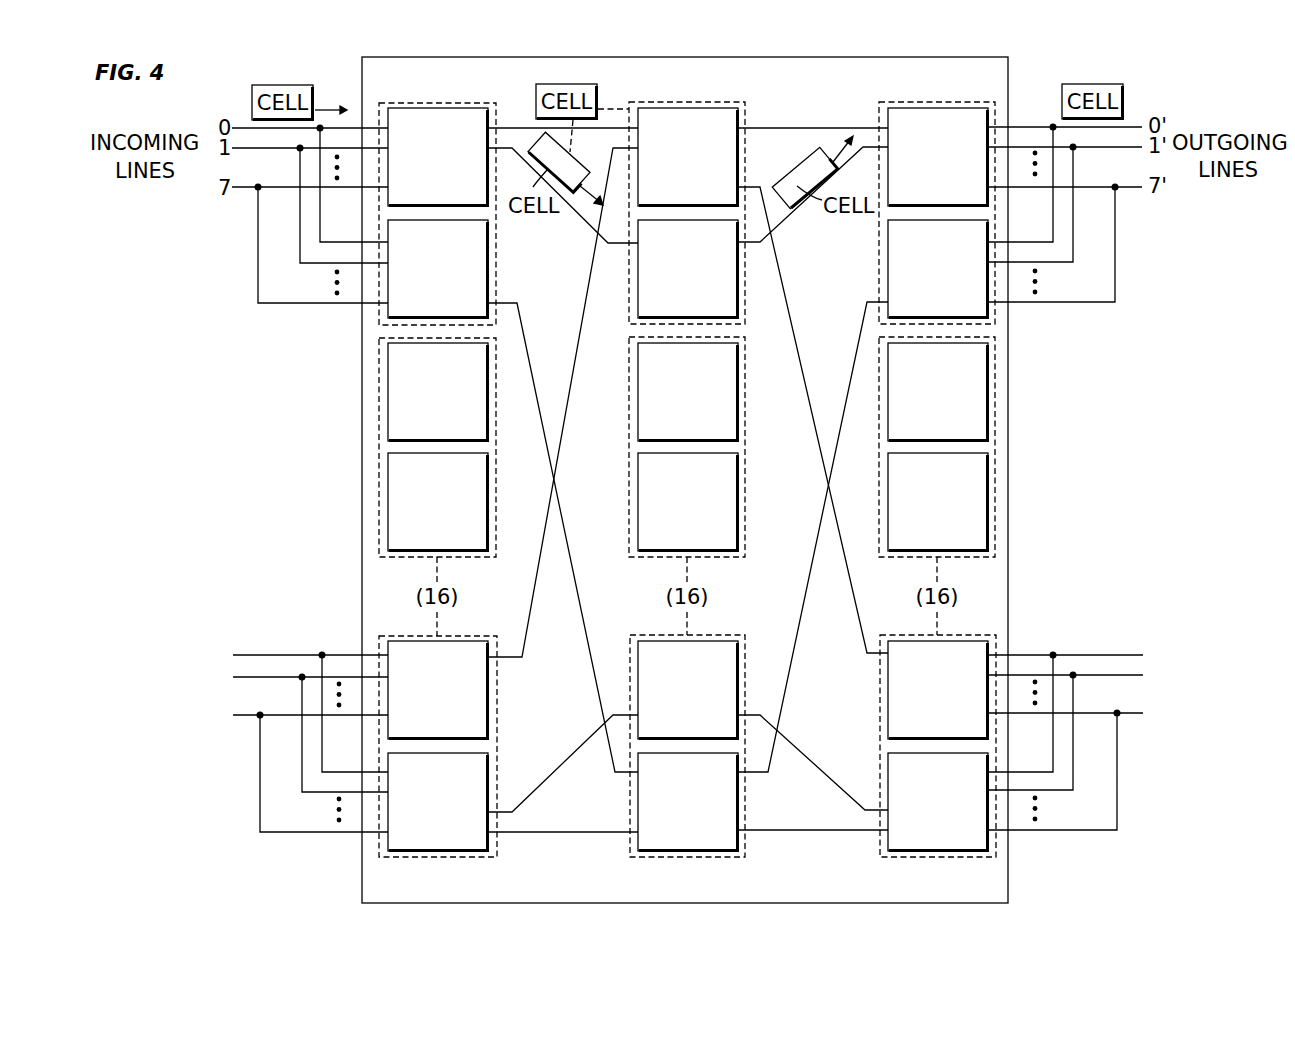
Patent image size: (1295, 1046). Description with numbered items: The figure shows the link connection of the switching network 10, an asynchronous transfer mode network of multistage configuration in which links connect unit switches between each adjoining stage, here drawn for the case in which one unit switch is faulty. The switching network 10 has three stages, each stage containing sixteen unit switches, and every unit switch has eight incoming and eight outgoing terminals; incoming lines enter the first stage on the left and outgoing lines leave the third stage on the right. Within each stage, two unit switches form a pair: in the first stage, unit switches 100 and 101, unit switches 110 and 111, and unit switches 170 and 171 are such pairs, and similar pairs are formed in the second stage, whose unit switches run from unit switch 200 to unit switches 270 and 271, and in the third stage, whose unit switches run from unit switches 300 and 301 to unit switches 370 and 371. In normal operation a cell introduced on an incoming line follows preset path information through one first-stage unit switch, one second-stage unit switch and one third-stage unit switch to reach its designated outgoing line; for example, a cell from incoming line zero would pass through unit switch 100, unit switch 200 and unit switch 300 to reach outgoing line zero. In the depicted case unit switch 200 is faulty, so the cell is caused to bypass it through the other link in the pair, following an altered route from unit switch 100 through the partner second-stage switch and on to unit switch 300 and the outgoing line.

The switching network 10 is at (800, 57).
The unit switch 100 is at (440, 122).
The unit switch 101 is at (472, 280).
The unit switch 110 is at (472, 417).
The unit switch 111 is at (470, 545).
The unit switch 170 is at (475, 710).
The unit switch 171 is at (463, 800).
The unit switch 200 is at (673, 123).
The unit switch 270 is at (723, 662).
The unit switch 271 is at (693, 835).
The unit switch 300 is at (925, 120).
The unit switch 301 is at (902, 282).
The unit switch 370 is at (902, 713).
The unit switch 371 is at (940, 835).